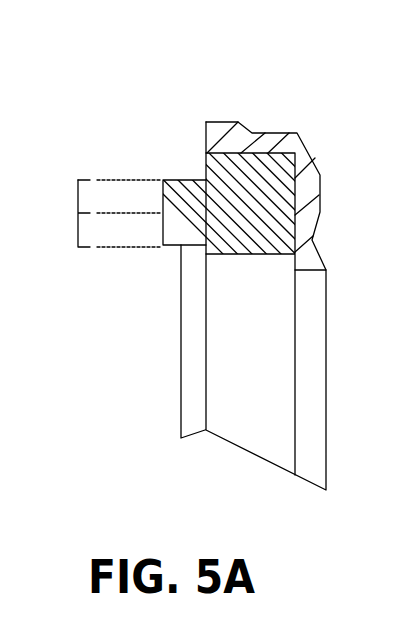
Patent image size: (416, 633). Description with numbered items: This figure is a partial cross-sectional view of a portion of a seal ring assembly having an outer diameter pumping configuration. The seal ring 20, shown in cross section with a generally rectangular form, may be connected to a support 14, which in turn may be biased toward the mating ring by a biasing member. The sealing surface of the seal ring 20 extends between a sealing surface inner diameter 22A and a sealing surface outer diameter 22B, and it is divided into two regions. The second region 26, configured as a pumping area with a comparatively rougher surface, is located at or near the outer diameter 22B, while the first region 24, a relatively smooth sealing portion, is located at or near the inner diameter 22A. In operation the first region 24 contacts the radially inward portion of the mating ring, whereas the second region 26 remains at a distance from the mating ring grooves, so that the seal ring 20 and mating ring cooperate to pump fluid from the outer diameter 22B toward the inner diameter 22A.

The support 14 is at (253, 107).
The seal ring 20 is at (260, 245).
The sealing surface inner diameter 22A is at (157, 250).
The sealing surface outer diameter 22B is at (162, 178).
The first region 24 is at (77, 227).
The second region 26 is at (77, 199).